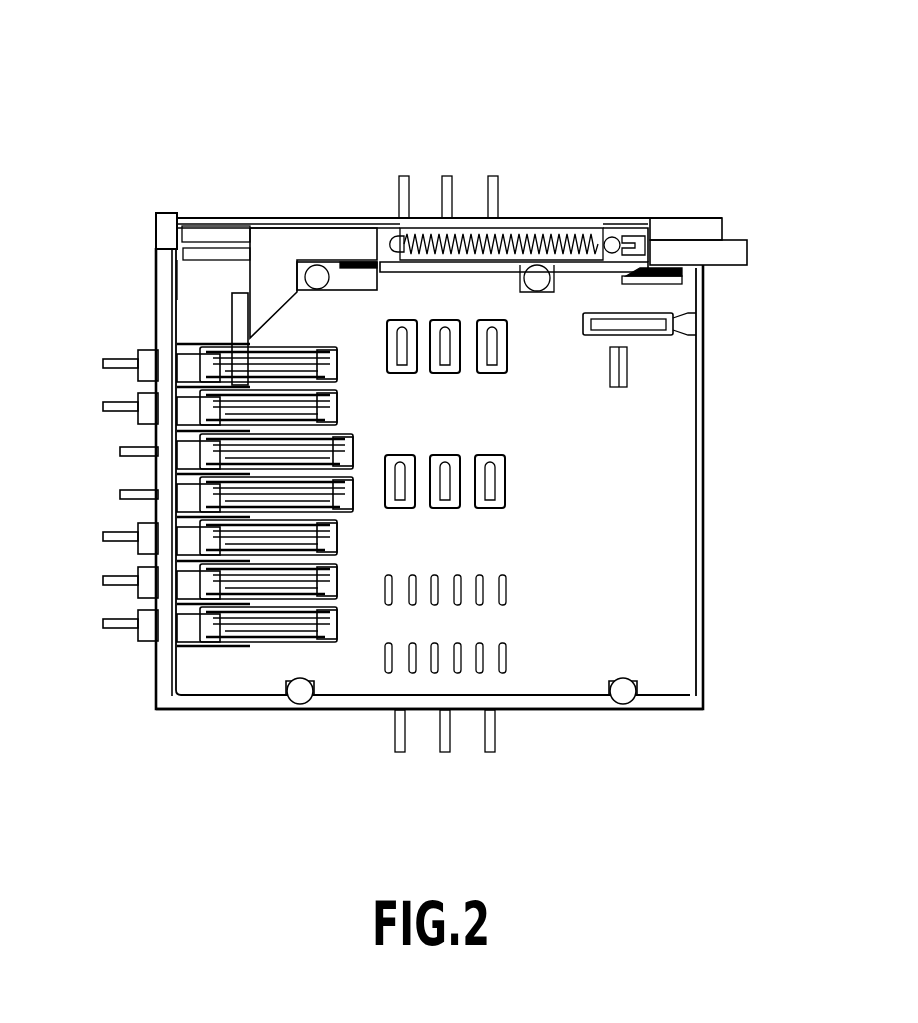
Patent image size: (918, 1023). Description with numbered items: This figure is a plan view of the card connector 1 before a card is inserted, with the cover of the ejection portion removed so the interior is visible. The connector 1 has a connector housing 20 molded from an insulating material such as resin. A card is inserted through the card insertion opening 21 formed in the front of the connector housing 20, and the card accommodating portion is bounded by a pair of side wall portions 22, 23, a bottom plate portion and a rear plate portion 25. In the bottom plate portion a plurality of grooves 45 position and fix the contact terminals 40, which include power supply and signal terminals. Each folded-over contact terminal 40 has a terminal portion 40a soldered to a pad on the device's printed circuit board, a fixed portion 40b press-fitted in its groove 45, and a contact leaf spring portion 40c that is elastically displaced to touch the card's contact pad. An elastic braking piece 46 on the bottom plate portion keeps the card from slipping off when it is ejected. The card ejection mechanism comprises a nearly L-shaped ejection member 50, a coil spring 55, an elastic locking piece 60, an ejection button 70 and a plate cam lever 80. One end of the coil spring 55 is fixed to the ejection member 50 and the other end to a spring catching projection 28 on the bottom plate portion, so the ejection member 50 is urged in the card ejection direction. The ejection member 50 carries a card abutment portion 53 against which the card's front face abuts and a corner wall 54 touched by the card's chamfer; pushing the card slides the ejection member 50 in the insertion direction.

The card connector 1 is at (711, 661).
The connector housing 20 is at (640, 645).
The card insertion opening 21 is at (660, 464).
The side wall portion 22 is at (588, 708).
The side wall portion 23 is at (575, 268).
The rear plate portion 25 is at (174, 338).
The spring catching projection 28 is at (612, 236).
The contact terminals 40 is at (203, 552).
The terminal portion 40a is at (124, 406).
The fixed portion 40b is at (185, 366).
The contact leaf spring portion 40c is at (287, 405).
The grooves 45 is at (272, 347).
The elastic braking piece 46 is at (686, 324).
The ejection member 50 is at (263, 246).
The card abutment portion 53 is at (238, 317).
The corner wall 54 is at (272, 300).
The coil spring 55 is at (549, 228).
The elastic locking piece 60 is at (197, 232).
The ejection button 70 is at (737, 260).
The plate cam lever 80 is at (627, 226).